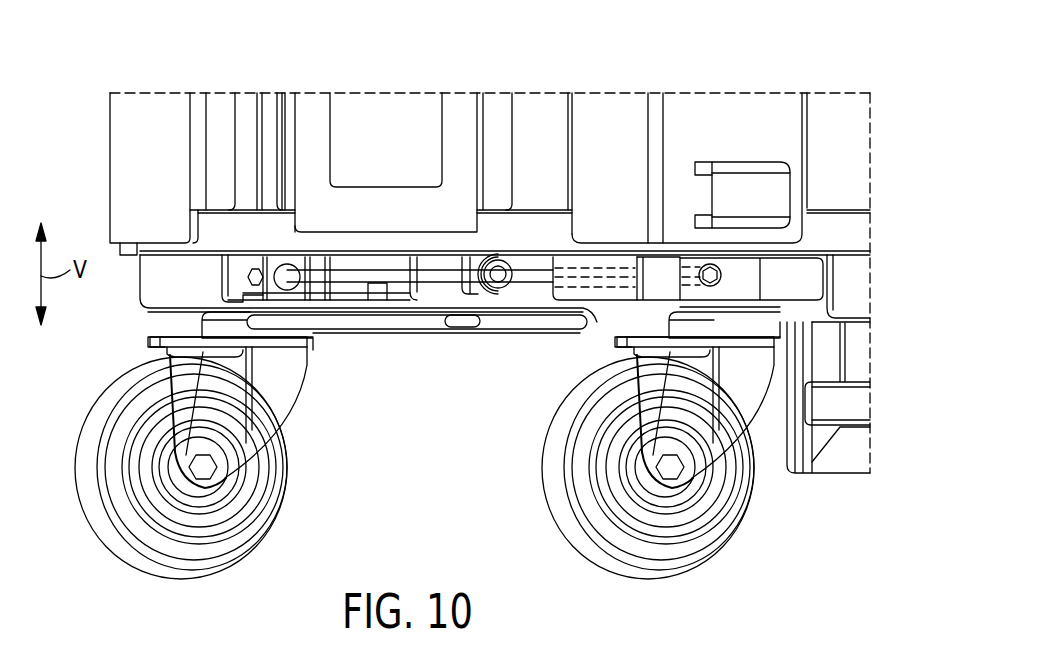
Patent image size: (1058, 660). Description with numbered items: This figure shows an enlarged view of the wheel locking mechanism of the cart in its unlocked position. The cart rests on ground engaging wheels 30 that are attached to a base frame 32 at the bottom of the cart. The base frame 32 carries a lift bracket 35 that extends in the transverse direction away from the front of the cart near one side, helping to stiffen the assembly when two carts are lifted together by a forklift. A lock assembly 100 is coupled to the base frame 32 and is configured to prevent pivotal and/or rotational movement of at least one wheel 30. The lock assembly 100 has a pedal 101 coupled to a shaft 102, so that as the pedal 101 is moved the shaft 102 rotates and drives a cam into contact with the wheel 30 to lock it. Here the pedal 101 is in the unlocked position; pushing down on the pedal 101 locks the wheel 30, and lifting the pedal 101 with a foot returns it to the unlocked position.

The ground engaging wheel 30 is at (95, 512).
The base frame 32 is at (738, 108).
The lift bracket 35 is at (773, 190).
The lock assembly 100 is at (440, 448).
The pedal 101 is at (393, 320).
The shaft 102 is at (512, 273).